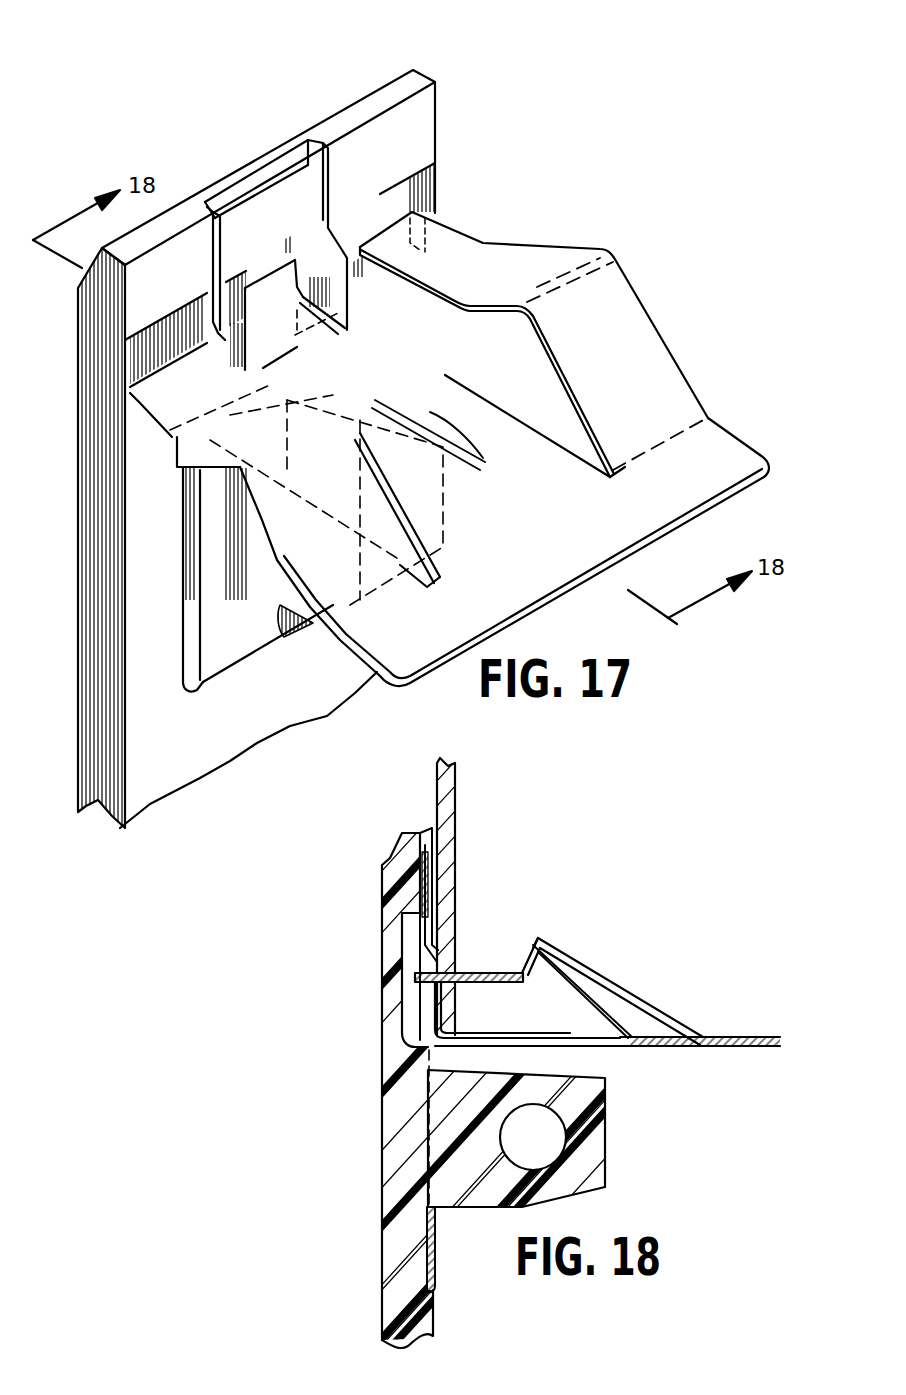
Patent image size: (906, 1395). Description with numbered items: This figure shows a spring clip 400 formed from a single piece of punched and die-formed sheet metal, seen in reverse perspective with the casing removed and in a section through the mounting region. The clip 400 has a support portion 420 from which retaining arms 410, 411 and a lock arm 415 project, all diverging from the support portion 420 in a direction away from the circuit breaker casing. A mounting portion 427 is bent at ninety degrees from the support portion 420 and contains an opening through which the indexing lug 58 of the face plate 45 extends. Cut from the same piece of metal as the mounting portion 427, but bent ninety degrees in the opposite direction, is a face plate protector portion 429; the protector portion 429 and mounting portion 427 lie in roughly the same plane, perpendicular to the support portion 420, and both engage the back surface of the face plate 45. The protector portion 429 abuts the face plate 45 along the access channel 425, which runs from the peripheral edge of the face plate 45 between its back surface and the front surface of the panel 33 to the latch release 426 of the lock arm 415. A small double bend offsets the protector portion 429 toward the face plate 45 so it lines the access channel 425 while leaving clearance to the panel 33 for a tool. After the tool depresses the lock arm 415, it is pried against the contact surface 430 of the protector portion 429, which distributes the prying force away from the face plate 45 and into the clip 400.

In FIG. 18, the panel 33 is at (458, 812).
In FIG. 17, the face plate 45 is at (425, 136).
In FIG. 18, the face plate 45 is at (392, 858).
In FIG. 17, the indexing lug 58 is at (282, 620).
In FIG. 18, the indexing lug 58 is at (590, 1150).
In FIG. 17, the spring clip 400 is at (760, 482).
In FIG. 18, the spring clip 400 is at (782, 1018).
In FIG. 17, the retaining arm 410 is at (665, 347).
In FIG. 18, the retaining arm 410 is at (655, 1002).
In FIG. 17, the retaining arm 411 is at (405, 565).
In FIG. 17, the lock arm 415 is at (470, 445).
In FIG. 18, the lock arm 415 is at (600, 988).
In FIG. 17, the support portion 420 is at (700, 482).
In FIG. 18, the support portion 420 is at (728, 1035).
In FIG. 17, the access channel 425 is at (310, 180).
In FIG. 18, the access channel 425 is at (434, 872).
In FIG. 17, the latch release 426 is at (315, 340).
In FIG. 18, the latch release 426 is at (440, 988).
In FIG. 17, the mounting portion 427 is at (210, 655).
In FIG. 18, the mounting portion 427 is at (437, 1257).
In FIG. 17, the face plate protector portion 429 is at (258, 202).
In FIG. 18, the face plate protector portion 429 is at (430, 845).
In FIG. 17, the contact surface 430 is at (245, 228).
In FIG. 18, the contact surface 430 is at (438, 895).